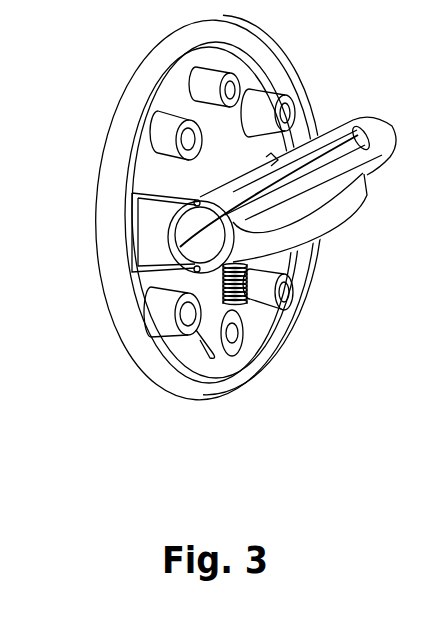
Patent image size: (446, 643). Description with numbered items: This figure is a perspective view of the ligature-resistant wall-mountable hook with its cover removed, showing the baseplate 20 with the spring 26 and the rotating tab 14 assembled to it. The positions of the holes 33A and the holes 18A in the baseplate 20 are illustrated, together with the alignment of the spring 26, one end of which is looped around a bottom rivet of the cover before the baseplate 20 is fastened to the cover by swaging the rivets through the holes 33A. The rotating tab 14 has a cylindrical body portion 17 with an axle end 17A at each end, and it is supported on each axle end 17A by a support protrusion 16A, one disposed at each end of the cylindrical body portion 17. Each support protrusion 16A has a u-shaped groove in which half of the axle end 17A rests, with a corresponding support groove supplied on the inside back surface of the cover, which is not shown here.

The baseplate 20 is at (160, 53).
The holes 18A is at (293, 106).
The holes 33A is at (238, 80).
The support protrusion 16A is at (140, 210).
The axle end 17A is at (176, 252).
The rotating tab 14 is at (368, 177).
The cylindrical body portion 17 is at (350, 231).
The spring 26 is at (231, 312).